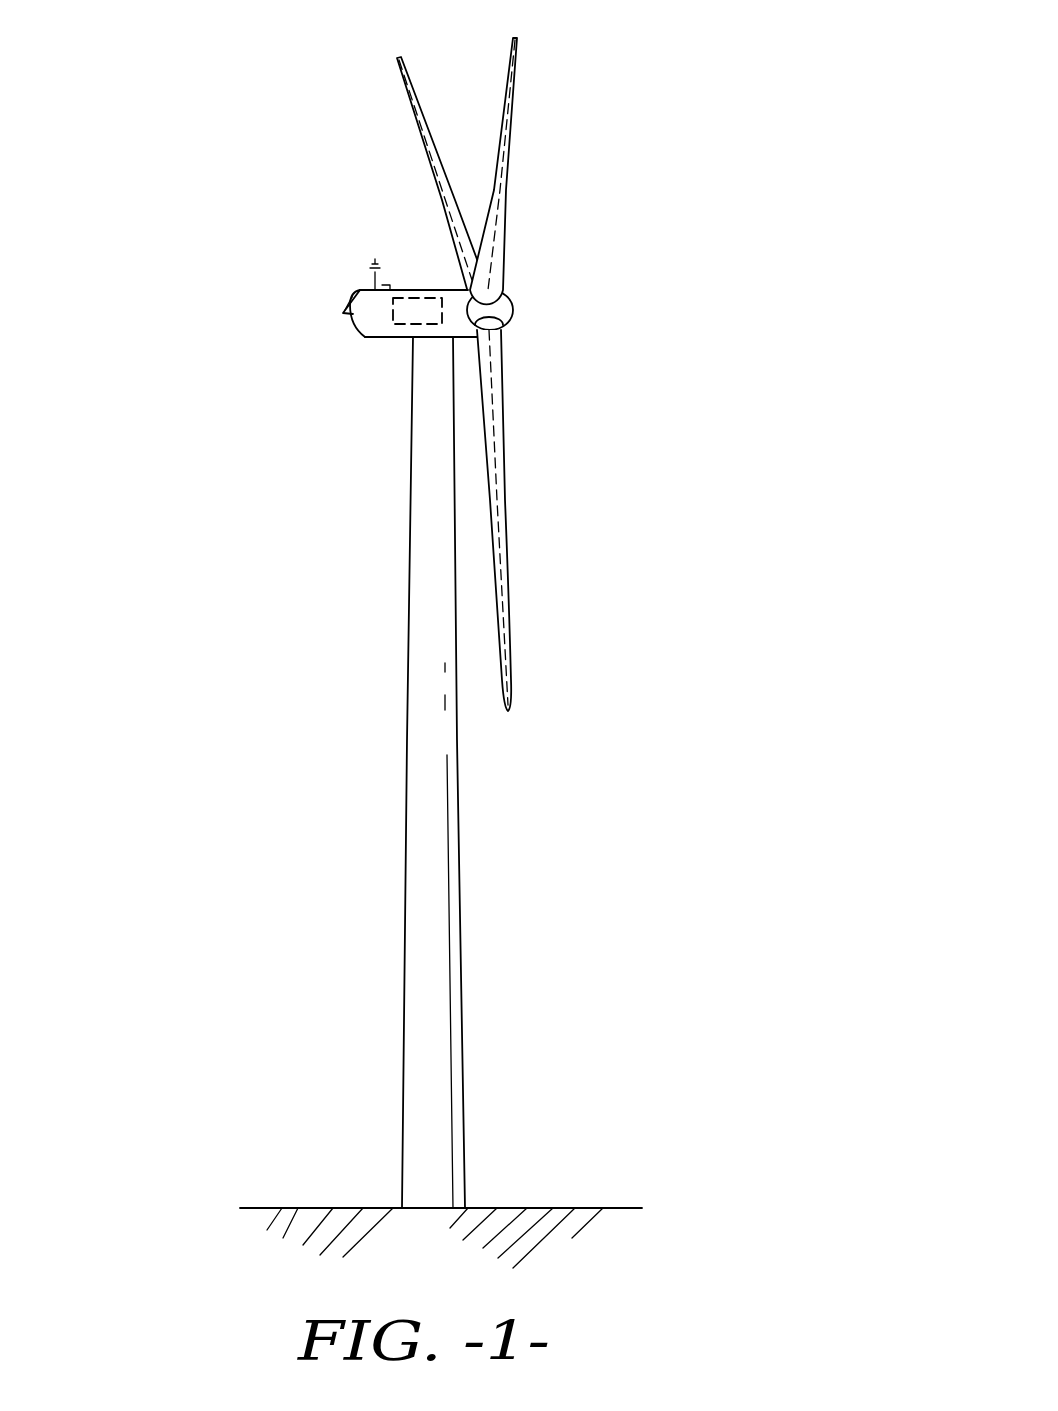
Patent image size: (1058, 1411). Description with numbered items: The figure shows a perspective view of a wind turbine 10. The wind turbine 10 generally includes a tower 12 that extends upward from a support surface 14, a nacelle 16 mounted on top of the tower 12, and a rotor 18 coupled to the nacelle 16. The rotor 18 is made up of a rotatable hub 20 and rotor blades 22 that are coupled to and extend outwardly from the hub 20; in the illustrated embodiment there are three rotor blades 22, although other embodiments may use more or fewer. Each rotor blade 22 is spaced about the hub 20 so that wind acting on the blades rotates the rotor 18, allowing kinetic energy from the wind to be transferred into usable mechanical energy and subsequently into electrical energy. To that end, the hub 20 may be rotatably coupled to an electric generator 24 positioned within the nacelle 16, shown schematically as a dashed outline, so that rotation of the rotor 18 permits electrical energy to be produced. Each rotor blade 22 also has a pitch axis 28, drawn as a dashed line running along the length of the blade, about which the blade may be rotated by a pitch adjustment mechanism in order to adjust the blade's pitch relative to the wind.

The wind turbine 10 is at (642, 115).
The tower 12 is at (418, 890).
The support surface 14 is at (327, 1208).
The nacelle 16 is at (387, 337).
The rotor 18 is at (519, 284).
The rotatable hub 20 is at (513, 318).
The rotor blade 22 is at (508, 77).
The electric generator 24 is at (420, 297).
The pitch axis 28 is at (448, 212).